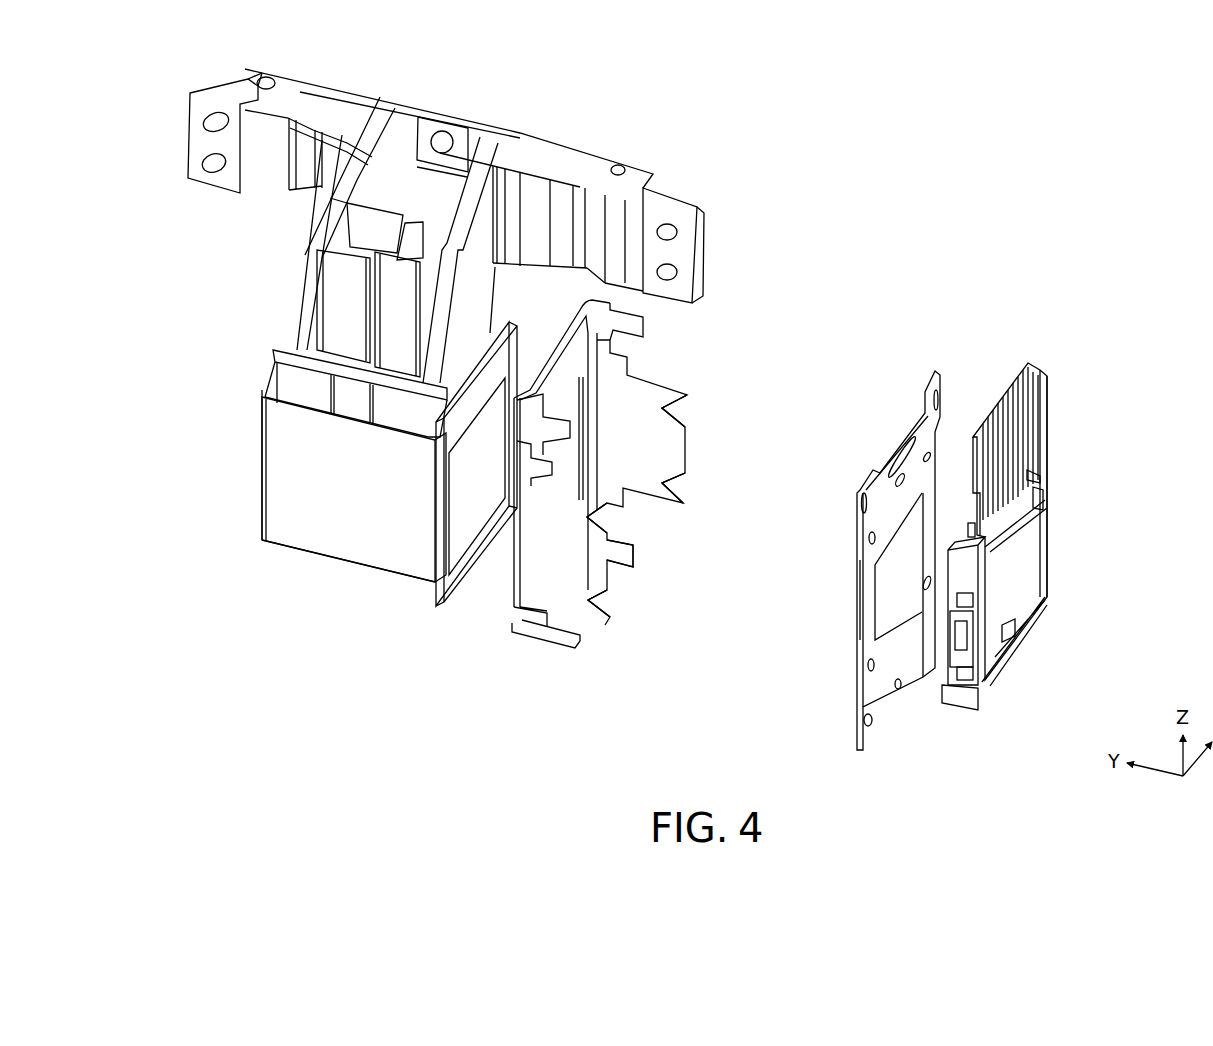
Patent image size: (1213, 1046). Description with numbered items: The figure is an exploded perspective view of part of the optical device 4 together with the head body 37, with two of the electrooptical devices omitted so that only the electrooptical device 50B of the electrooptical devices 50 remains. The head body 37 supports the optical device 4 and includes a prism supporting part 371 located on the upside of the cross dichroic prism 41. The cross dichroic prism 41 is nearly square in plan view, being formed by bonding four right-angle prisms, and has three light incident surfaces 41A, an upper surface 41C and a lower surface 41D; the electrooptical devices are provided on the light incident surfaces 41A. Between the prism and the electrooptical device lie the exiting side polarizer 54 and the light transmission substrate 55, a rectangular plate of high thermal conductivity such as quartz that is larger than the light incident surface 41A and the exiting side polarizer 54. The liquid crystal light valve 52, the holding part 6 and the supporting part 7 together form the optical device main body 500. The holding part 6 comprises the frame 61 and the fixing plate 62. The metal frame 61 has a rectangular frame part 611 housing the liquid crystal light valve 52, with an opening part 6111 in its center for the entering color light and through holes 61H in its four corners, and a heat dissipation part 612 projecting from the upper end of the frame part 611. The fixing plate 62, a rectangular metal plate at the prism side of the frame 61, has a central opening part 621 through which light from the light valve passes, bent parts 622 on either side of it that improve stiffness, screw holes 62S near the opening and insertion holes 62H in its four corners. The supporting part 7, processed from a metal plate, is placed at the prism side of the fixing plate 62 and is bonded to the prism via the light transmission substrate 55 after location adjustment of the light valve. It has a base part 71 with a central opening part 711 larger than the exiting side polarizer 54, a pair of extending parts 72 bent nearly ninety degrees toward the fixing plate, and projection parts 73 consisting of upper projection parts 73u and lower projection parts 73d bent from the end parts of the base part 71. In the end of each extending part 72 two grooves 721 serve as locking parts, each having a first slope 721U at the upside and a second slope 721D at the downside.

The optical device 4 is at (836, 126).
The head body 37 is at (444, 253).
The prism supporting part 371 is at (297, 270).
The cross dichroic prism 41 is at (268, 555).
The light incident surface 41A is at (262, 496).
The upper surface 41C is at (264, 391).
The lower surface 41D is at (380, 572).
The exiting side polarizer 54 is at (463, 525).
The light transmission substrate 55 is at (450, 580).
The optical device main body 500 is at (819, 458).
The supporting part 7 is at (649, 421).
The base part 71 is at (565, 358).
The extending parts 72 is at (654, 395).
The opening part 711 is at (580, 447).
The groove 721 is at (688, 420).
The first slope 721U is at (688, 404).
The second slope 721D is at (684, 433).
The projection parts 73 is at (618, 406).
The projection parts 73u is at (628, 310).
The projection parts 73d is at (618, 562).
The electrooptical device 50 is at (893, 224).
The electrooptical device 50B is at (853, 247).
The liquid crystal light valve 52 is at (1030, 562).
The holding part 6 is at (963, 565).
The frame 61 is at (1049, 544).
The frame part 611 is at (1046, 542).
The opening part 6111 is at (1016, 630).
The through holes 61H is at (1042, 472).
The heat dissipation part 612 is at (1007, 393).
The fixing plate 62 is at (868, 544).
The opening part 621 is at (876, 620).
The bent parts 622 is at (858, 597).
The insertion holes 62H is at (945, 400).
The screw holes 62S is at (930, 443).